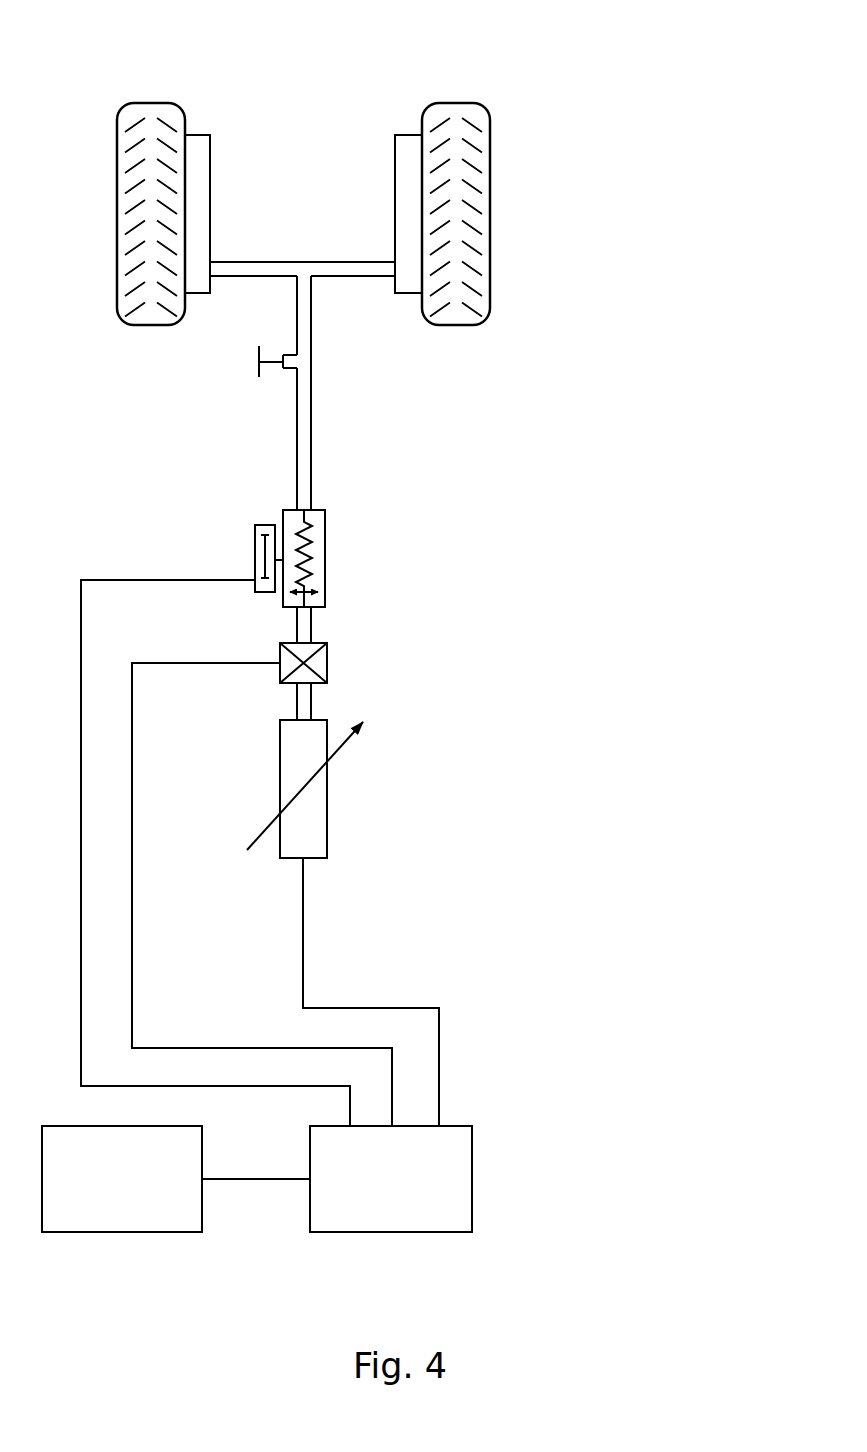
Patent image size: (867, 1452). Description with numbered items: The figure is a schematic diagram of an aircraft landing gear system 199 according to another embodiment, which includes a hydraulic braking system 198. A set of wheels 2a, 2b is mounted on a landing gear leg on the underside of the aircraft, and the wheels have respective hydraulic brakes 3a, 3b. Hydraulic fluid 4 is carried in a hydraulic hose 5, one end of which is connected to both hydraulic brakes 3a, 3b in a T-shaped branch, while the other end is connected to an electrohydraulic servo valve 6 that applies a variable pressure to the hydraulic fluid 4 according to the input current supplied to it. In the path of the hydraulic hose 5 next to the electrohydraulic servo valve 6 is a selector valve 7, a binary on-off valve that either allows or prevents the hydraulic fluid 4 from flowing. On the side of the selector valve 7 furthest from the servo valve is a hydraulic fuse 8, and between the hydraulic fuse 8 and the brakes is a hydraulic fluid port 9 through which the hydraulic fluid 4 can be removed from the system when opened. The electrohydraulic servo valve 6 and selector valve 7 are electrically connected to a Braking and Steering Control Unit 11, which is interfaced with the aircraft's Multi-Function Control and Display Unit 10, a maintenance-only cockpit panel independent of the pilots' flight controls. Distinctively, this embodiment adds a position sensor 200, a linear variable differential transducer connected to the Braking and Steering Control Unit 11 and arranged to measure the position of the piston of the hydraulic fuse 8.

The wheel 2a is at (155, 102).
The wheel 2b is at (458, 102).
The hydraulic brake 3a is at (212, 178).
The hydraulic brake 3b is at (393, 157).
The hydraulic fluid 4 is at (302, 478).
The hydraulic hose 5 is at (313, 435).
The electrohydraulic servo valve 6 is at (328, 803).
The selector valve 7 is at (330, 660).
The hydraulic fuse 8 is at (323, 565).
The hydraulic fluid port 9 is at (272, 368).
The Multi-Function Control and Display Unit (MCDU) 10 is at (85, 1233).
The Braking and Steering Control Unit (BSCU) 11 is at (357, 1233).
The hydraulic braking system 198 is at (480, 625).
The aircraft landing gear system 199 is at (631, 110).
The position sensor 200 is at (253, 560).